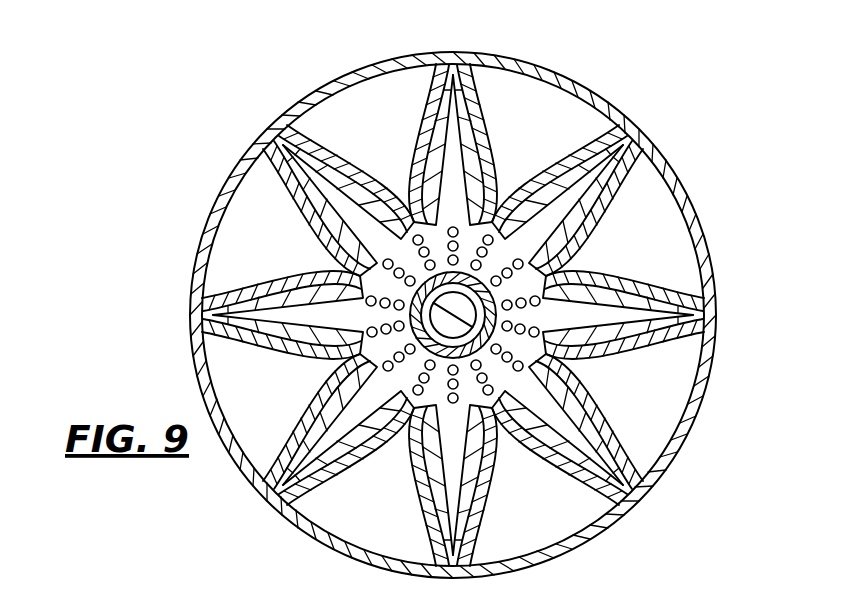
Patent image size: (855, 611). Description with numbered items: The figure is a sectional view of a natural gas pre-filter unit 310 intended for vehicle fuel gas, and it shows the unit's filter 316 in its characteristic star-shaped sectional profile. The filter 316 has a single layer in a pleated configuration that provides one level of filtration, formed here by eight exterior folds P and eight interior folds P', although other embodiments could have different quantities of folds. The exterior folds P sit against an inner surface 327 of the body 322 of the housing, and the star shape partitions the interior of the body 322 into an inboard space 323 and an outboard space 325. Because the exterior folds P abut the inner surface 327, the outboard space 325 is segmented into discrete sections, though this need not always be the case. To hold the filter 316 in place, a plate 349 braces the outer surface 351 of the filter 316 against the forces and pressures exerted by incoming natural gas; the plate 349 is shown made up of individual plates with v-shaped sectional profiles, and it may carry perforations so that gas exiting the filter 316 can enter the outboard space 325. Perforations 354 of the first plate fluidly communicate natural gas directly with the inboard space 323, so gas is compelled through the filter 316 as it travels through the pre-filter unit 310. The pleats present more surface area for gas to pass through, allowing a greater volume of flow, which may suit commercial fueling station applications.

The pre-filter unit 310 is at (677, 150).
The filter 316 is at (600, 209).
The body 322 is at (592, 97).
The inboard space 323 is at (533, 237).
The outboard space 325 is at (533, 131).
The inner surface 327 is at (535, 92).
The plate 349 is at (420, 143).
The outer surface 351 is at (325, 223).
The perforations 354 is at (545, 305).
The exterior folds P is at (496, 42).
The interior folds P' is at (443, 198).